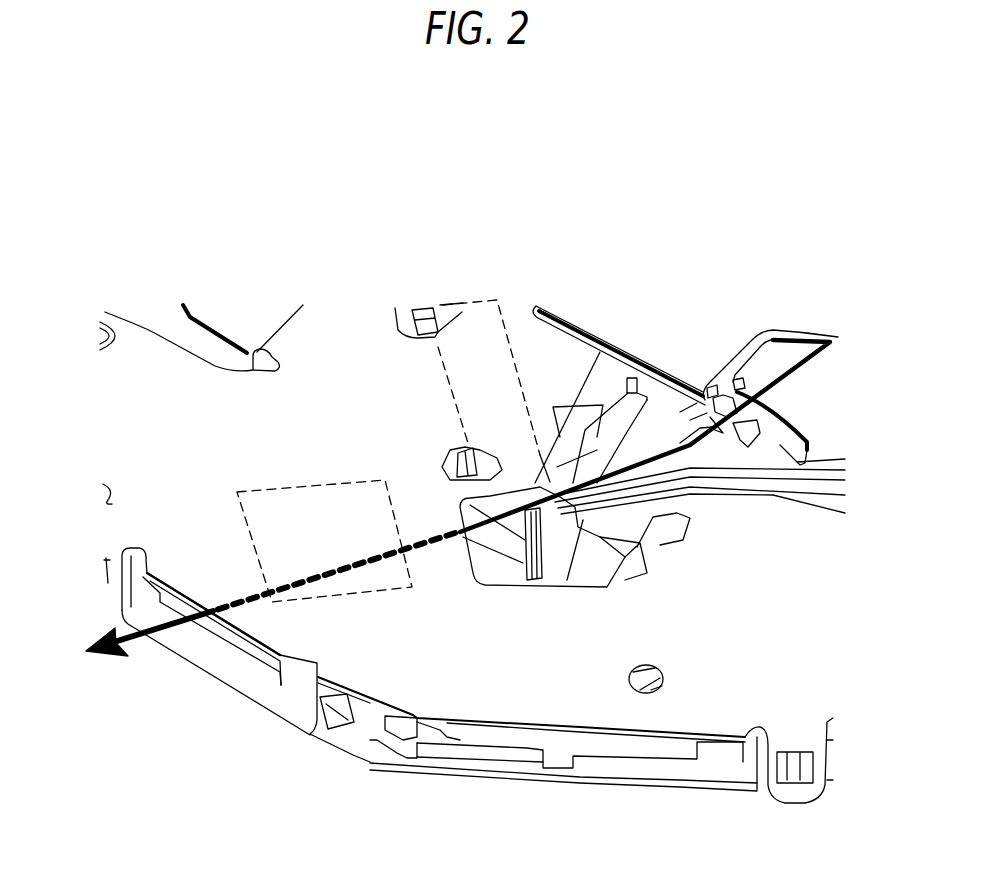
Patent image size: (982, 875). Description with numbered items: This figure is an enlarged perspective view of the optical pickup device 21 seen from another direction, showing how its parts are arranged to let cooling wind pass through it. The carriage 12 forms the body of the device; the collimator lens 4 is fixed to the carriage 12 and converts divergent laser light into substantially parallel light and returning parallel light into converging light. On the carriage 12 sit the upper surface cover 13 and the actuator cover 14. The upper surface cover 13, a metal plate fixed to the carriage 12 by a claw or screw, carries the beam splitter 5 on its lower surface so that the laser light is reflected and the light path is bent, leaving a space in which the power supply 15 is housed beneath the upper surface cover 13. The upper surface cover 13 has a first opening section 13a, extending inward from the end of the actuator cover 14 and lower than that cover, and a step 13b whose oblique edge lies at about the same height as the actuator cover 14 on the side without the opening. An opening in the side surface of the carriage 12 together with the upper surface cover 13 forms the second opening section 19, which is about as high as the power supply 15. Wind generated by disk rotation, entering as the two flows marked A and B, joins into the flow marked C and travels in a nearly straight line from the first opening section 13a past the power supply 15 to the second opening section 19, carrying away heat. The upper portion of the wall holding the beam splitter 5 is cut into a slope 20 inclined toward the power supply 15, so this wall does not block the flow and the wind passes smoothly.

The optical pickup device 21 is at (462, 191).
The upper surface cover 13 is at (342, 342).
The actuator cover 14 is at (653, 338).
The beam splitter 5 is at (514, 437).
The collimator lens 4 is at (621, 440).
The slope 20 is at (528, 588).
The first opening section 13a is at (577, 560).
The step 13b is at (823, 460).
The power supply 15 is at (300, 505).
The second opening section 19 is at (230, 637).
The carriage 12 is at (297, 722).